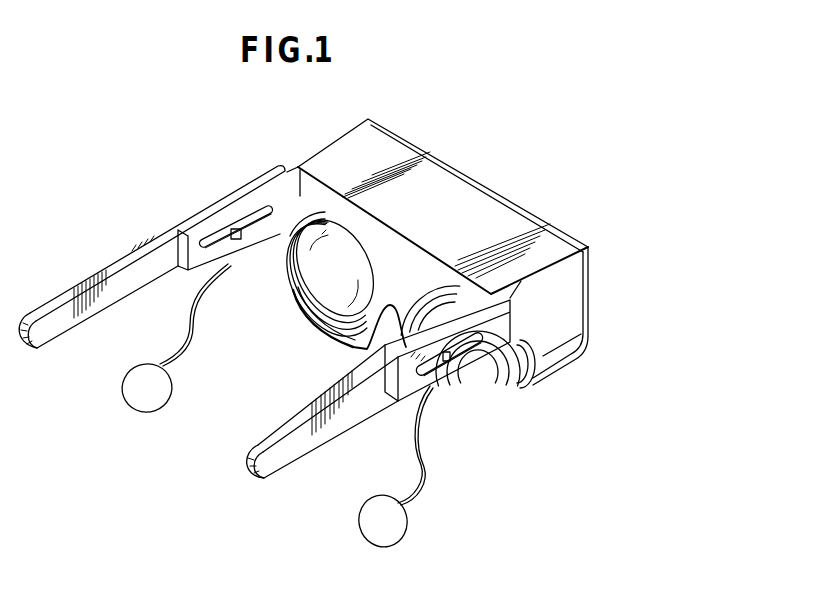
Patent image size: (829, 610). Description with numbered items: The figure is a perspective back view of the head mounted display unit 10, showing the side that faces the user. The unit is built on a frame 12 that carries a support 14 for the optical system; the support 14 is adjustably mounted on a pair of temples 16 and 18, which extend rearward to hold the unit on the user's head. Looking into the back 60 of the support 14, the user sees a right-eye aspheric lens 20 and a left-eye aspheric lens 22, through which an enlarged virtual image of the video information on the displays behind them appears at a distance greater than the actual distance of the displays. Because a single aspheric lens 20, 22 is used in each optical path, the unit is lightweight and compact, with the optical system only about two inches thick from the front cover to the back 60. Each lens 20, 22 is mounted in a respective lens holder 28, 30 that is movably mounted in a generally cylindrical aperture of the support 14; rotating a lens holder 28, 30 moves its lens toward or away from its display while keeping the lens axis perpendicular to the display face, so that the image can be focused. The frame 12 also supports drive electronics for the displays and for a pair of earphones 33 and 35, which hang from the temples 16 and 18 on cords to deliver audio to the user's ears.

The head mounted display unit 10 is at (552, 176).
The frame 12 is at (257, 167).
The support 14 is at (418, 193).
The temple 16 is at (92, 315).
The temple 18 is at (309, 444).
The right-eye aspheric lens 20 is at (469, 382).
The left-eye aspheric lens 22 is at (328, 288).
The lens holder 28 is at (520, 388).
The lens holder 30 is at (295, 258).
The earphone 33 is at (395, 528).
The earphone 35 is at (133, 403).
The back of the support 60 is at (421, 286).